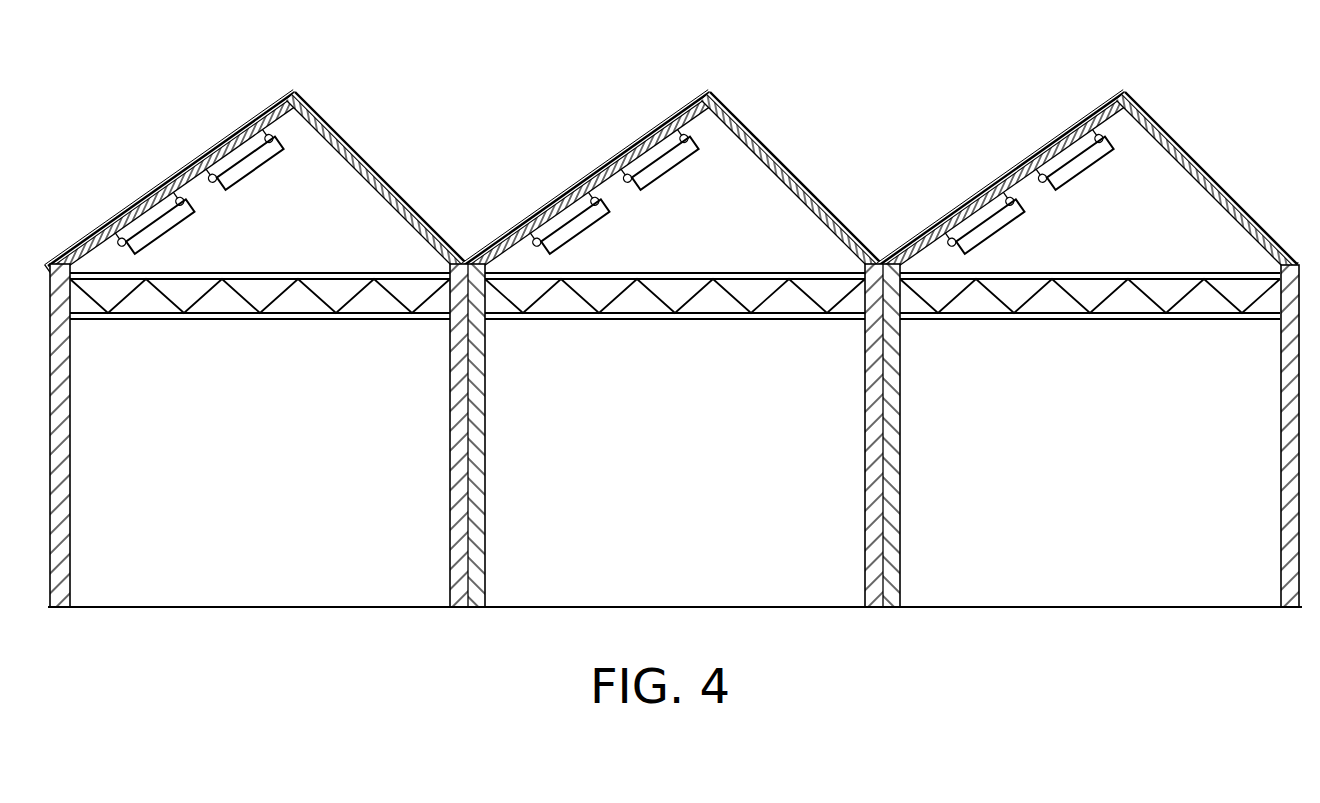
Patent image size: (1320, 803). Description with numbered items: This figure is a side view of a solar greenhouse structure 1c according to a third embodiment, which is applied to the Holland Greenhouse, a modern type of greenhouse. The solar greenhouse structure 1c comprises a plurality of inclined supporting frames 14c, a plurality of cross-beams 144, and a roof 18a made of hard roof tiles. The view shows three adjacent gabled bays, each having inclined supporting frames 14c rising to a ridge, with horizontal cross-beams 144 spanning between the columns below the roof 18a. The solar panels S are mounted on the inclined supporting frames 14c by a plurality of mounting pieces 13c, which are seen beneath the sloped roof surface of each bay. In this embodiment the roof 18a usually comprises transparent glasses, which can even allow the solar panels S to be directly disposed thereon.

The solar greenhouse structure 1c is at (673, 317).
The mounting pieces 13c is at (262, 118).
The inclined supporting frames 14c is at (409, 151).
The roof 18a is at (412, 204).
The solar panels S is at (148, 235).
The cross-beams 144 is at (223, 320).